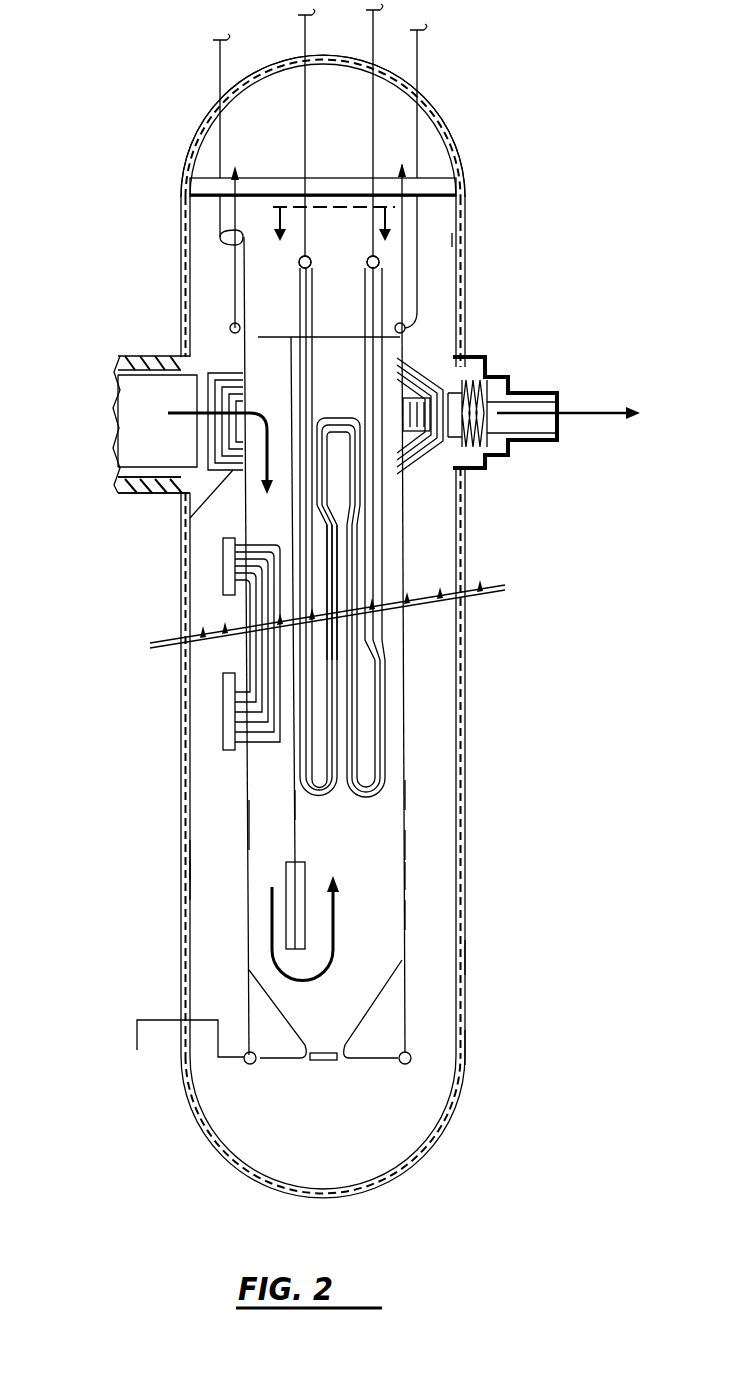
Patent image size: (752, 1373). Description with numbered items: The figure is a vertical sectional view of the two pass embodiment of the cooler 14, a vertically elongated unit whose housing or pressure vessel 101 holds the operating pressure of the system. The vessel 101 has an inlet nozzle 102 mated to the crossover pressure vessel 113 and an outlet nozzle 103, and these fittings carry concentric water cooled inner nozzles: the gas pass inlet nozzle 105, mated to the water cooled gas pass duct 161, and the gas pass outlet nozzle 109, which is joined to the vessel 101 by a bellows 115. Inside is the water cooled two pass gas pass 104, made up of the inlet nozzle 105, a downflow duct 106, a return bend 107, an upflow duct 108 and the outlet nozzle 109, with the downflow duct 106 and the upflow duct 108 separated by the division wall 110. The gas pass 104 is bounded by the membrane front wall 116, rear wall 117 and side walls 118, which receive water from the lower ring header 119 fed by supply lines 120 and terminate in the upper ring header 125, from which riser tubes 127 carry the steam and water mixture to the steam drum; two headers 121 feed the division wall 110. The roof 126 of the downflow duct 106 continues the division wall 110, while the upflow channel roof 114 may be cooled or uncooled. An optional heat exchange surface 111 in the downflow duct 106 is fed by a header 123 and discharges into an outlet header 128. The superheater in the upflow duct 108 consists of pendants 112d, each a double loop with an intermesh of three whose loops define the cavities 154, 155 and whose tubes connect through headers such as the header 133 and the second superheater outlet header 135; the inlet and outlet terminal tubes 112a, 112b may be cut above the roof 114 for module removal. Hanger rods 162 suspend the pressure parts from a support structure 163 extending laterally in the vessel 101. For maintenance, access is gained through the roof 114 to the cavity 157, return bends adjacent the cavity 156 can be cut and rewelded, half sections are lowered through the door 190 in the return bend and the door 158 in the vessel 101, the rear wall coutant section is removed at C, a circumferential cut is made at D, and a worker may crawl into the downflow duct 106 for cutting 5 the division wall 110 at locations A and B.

The cooler 14 is at (514, 88).
The pressure vessel 101 is at (462, 725).
The inlet nozzle 102 is at (168, 493).
The outlet nozzle 103 is at (490, 468).
The gas pass 104 is at (373, 908).
The gas pass inlet nozzle 105 is at (188, 520).
The downflow duct 106 is at (267, 823).
The return bend 107 is at (293, 993).
The upflow duct 108 is at (375, 872).
The gas pass outlet nozzle 109 is at (348, 360).
The division wall 110 is at (300, 793).
The heat exchange surface 111 is at (205, 650).
The inlet terminal tube 112a is at (300, 22).
The outlet terminal tube 112b is at (378, 22).
The pendant 112d is at (340, 545).
The crossover pressure vessel 113 is at (120, 360).
The upflow channel roof 114 is at (345, 330).
The bellows 115 is at (497, 410).
The front wall 116 is at (242, 880).
The rear wall 117 is at (405, 793).
The side wall 118 is at (382, 842).
The lower ring header 119 is at (247, 1064).
The supply line 120 is at (167, 1043).
The division wall header 121 is at (304, 862).
The header 123 is at (223, 712).
The upper ring header 125 is at (230, 327).
The downflow duct roof 126 is at (263, 350).
The riser tube 127 is at (218, 68).
The outlet header 128 is at (223, 565).
The first superheater outlet header/second superheater inlet header 133 is at (300, 267).
The second superheater outlet header 135 is at (370, 256).
The cavity 154 is at (313, 745).
The cavity 155 is at (365, 717).
The cavity 156 is at (340, 470).
The cavity 157 is at (420, 330).
The door 158 is at (338, 1198).
The water cooled gas pass duct 161 is at (137, 463).
The hanger rod 162 is at (455, 240).
The pressure part support structure 163 is at (190, 150).
The door 190 is at (325, 1062).
The cut 5 is at (328, 232).
The division wall cut location A is at (245, 350).
The division wall cut location B is at (185, 857).
The rear wall coutant section C is at (466, 960).
The circumferential cut D is at (466, 1050).